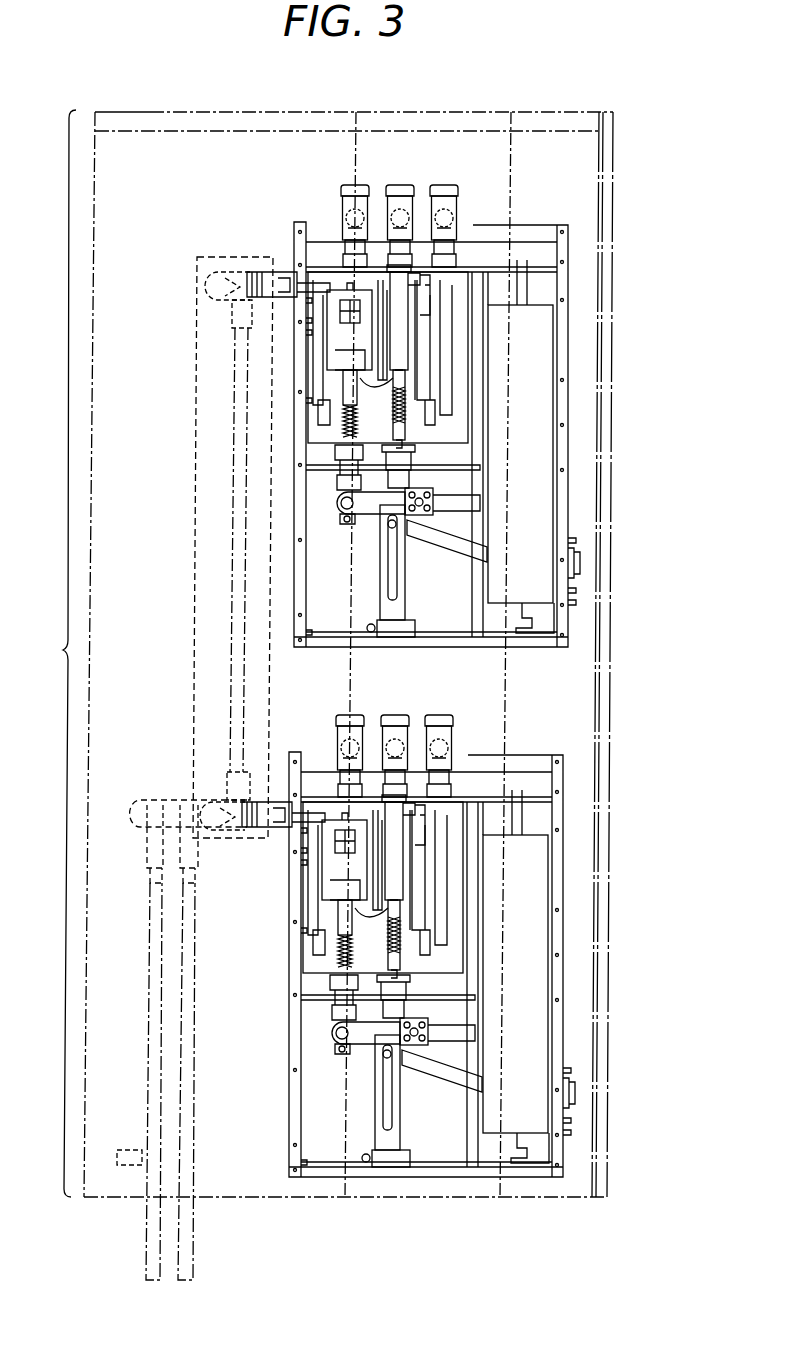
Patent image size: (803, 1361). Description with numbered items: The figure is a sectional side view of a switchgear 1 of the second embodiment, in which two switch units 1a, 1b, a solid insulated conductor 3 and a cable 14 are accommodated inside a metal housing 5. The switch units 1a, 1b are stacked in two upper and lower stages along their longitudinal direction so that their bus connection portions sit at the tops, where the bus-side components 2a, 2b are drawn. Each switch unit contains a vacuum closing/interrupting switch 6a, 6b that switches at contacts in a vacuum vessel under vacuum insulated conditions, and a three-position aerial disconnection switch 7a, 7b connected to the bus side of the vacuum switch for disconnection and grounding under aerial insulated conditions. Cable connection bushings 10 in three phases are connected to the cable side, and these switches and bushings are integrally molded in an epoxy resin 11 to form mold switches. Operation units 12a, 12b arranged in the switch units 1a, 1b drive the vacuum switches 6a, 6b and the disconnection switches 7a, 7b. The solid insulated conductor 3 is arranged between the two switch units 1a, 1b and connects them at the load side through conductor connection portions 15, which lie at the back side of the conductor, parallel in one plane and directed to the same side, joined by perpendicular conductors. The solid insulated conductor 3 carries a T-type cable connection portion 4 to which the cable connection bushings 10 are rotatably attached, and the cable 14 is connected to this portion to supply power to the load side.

The switchgear 1 is at (57, 653).
The switch unit 1a is at (568, 308).
The switch unit 1b is at (563, 893).
The first syringe set 2a is at (467, 178).
The second syringe set 2b is at (461, 710).
The solid insulated conductor 3 is at (193, 573).
The T-type cable connection portion 4 is at (129, 793).
The metal housing 5 is at (150, 112).
The vacuum closing/interrupting switch 6a is at (331, 353).
The vacuum closing/interrupting switch 6b is at (330, 878).
The three-position aerial disconnection switch 7a is at (453, 262).
The three-position aerial disconnection switch 7b is at (453, 793).
The cable connection bushing 10 is at (287, 298).
The epoxy resin 11 is at (432, 323).
The operation unit 12a is at (550, 401).
The operation unit 12b is at (545, 988).
The cable 14 is at (150, 1005).
The conductor connection portion 15 is at (265, 297).